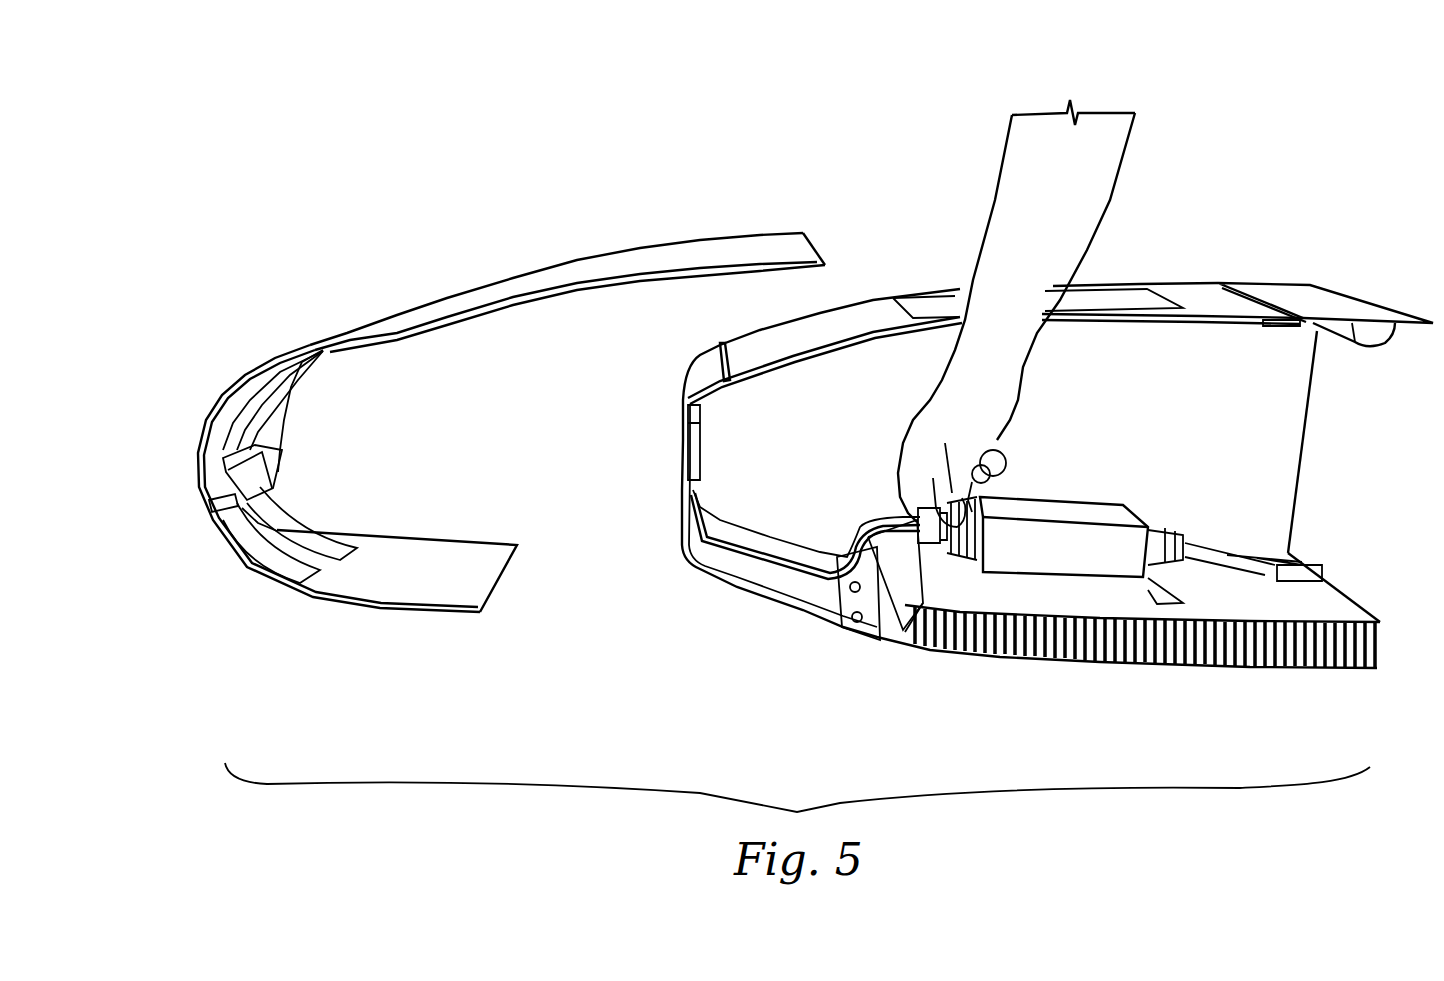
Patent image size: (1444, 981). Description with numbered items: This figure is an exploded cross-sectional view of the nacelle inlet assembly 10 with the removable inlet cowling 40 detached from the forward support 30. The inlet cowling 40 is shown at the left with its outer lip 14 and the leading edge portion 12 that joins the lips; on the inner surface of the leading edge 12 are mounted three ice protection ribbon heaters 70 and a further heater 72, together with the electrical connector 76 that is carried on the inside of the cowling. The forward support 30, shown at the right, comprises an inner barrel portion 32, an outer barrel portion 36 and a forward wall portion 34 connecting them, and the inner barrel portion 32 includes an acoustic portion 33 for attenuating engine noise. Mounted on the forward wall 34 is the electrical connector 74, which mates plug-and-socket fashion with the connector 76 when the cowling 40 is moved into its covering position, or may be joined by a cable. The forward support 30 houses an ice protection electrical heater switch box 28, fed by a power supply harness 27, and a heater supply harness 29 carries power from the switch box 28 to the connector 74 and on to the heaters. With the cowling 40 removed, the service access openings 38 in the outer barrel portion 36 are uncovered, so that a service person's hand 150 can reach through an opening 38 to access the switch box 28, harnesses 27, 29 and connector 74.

The nacelle inlet assembly 10 is at (208, 192).
The leading edge portion 12 is at (195, 478).
The outer lip 14 is at (573, 277).
The power supply harness 27 is at (1325, 572).
The ice protection electrical heater switch box 28 is at (1052, 507).
The heater supply harness 29 is at (787, 576).
The forward support 30 is at (1198, 240).
The inner barrel portion 32 is at (1140, 668).
The acoustic portion 33 is at (1285, 648).
The forward wall portion 34 is at (683, 518).
The outer barrel portion 36 is at (793, 325).
The service access opening 38 is at (1090, 300).
The inlet cowling 40 is at (217, 573).
The ice protection ribbon heaters 70 is at (267, 558).
The ice protection ribbon heater 72 is at (213, 498).
The electrical connector 74 is at (700, 443).
The electrical connector 76 is at (275, 473).
The hand 150 is at (987, 222).